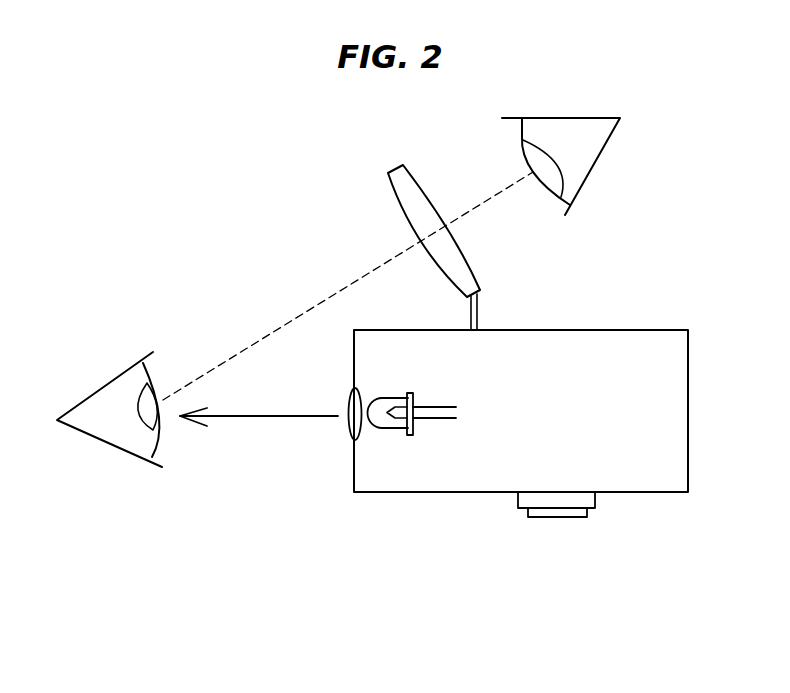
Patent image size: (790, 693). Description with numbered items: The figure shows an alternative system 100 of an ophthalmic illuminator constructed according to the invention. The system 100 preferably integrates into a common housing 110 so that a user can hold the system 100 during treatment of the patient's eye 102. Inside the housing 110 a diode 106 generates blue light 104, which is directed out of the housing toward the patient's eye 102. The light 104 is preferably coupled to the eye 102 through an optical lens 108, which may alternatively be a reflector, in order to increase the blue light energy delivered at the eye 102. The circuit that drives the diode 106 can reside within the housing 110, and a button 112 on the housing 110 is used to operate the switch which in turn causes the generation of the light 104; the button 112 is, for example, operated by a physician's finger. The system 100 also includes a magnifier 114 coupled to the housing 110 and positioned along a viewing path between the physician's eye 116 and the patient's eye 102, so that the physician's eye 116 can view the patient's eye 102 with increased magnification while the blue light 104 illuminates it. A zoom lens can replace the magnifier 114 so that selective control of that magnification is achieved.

The system 100 is at (268, 574).
The patient's eye 102 is at (113, 372).
The blue light 104 is at (255, 417).
The diode 106 is at (394, 398).
The optical lens 108 is at (348, 400).
The housing 110 is at (582, 432).
The button 112 is at (595, 500).
The magnifier 114 is at (428, 186).
The physician's eye 116 is at (584, 106).